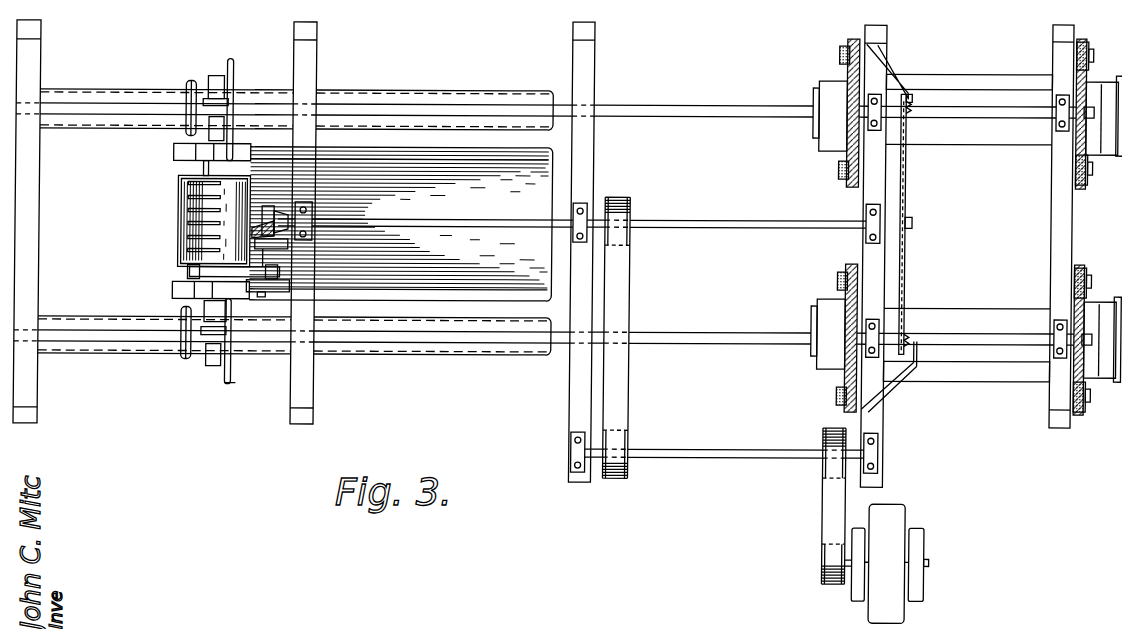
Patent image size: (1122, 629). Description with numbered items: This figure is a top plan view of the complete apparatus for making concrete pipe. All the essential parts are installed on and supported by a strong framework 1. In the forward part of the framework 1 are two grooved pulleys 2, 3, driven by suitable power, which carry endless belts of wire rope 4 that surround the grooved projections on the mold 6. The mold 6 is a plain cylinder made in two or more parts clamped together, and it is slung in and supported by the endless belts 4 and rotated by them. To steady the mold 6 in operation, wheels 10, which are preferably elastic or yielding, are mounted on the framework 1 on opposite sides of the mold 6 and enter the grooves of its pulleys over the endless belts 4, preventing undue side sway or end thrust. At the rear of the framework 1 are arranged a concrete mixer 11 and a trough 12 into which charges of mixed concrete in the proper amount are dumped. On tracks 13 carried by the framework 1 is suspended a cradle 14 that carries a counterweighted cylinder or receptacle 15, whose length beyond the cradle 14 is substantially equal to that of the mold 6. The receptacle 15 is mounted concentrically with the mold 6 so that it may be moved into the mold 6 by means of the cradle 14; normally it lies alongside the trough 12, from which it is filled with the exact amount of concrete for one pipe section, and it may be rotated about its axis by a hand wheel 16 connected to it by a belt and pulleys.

The framework 1 is at (588, 74).
The grooved pulley 2 is at (850, 150).
The grooved pulley 3 is at (1088, 84).
The endless belts of wire rope 4 is at (846, 125).
The mold 6 is at (1004, 137).
The wheels 10 is at (848, 47).
The concrete mixer 11 is at (178, 219).
The trough 12 is at (396, 257).
The tracks 13 is at (689, 107).
The cradle 14 is at (212, 77).
The counterweighted cylinder or receptacle 15 is at (429, 90).
The hand wheel 16 is at (233, 63).